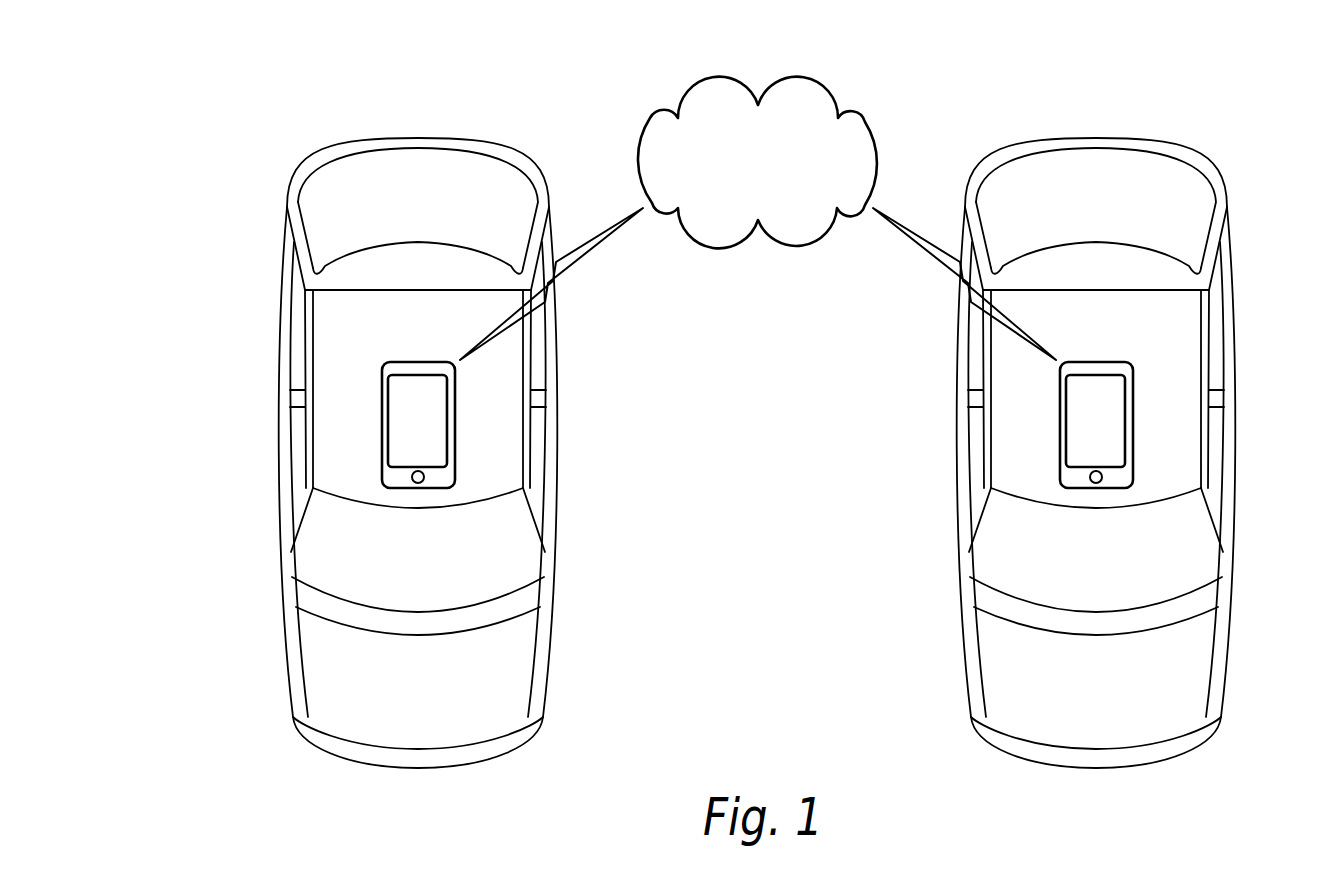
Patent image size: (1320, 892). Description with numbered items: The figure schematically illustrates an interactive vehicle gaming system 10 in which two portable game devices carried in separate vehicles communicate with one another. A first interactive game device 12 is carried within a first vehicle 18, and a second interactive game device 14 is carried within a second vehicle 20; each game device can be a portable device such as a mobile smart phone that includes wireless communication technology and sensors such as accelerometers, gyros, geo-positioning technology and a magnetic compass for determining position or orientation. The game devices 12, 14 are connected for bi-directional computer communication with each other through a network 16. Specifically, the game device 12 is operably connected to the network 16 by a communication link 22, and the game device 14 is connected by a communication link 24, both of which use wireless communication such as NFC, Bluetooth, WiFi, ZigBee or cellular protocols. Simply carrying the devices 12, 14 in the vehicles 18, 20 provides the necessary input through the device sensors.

The interactive vehicle gaming system 10 is at (237, 101).
The first interactive game device 12 is at (418, 366).
The second interactive game device 14 is at (1098, 366).
The network 16 is at (824, 92).
The first vehicle 18 is at (388, 718).
The second vehicle 20 is at (1128, 718).
The communication link 22 is at (568, 282).
The communication link 24 is at (948, 282).